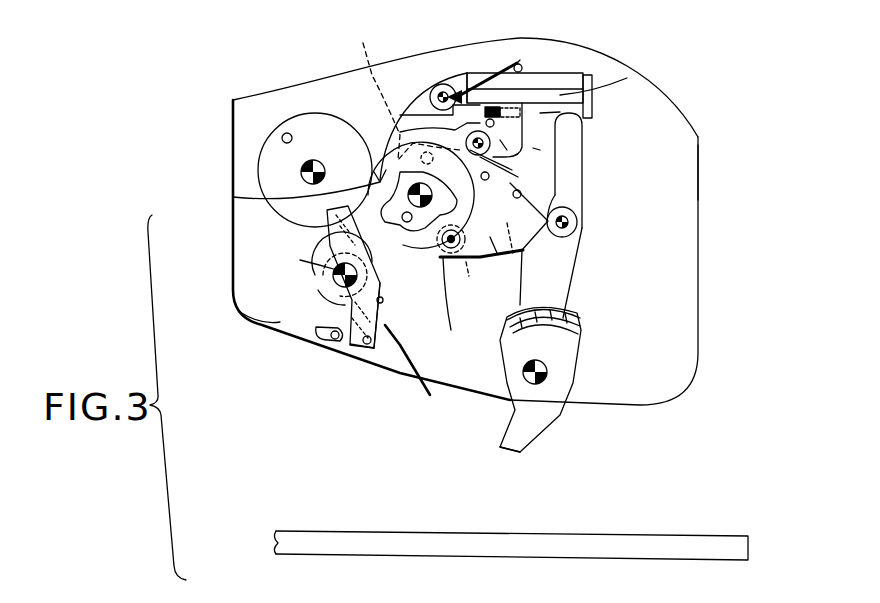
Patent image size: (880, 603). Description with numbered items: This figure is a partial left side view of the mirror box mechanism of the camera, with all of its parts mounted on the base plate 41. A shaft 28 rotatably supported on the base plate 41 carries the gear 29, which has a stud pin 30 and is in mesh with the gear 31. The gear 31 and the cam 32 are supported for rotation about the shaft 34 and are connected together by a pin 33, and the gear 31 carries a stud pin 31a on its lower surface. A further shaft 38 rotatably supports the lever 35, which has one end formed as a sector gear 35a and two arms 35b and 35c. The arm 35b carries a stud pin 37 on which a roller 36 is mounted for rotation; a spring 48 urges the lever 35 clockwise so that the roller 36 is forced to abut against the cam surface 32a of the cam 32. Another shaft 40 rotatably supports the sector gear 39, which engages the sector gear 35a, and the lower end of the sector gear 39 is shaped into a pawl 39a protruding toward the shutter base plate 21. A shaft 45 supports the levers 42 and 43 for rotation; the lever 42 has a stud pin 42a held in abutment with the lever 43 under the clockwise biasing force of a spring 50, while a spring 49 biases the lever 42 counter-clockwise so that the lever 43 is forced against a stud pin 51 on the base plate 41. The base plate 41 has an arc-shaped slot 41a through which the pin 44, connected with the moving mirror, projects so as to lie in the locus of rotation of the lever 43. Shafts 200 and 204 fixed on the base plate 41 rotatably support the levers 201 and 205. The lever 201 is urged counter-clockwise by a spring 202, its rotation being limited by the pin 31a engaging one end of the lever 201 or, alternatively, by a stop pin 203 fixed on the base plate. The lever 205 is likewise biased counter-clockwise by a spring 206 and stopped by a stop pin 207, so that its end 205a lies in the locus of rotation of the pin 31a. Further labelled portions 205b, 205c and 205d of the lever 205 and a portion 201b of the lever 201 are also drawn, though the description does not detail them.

The shutter base plate 21 is at (603, 533).
The shaft 28 is at (303, 170).
The gear 29 is at (259, 183).
The stud pin 30 is at (283, 134).
The gear 31 is at (378, 178).
The stud pin 31a is at (364, 44).
The cam 32 is at (415, 248).
The cam surface 32a is at (252, 201).
The pin 33 is at (406, 223).
The shaft 34 is at (412, 192).
The lever 35 is at (580, 250).
The sector gear 35a is at (548, 322).
The arm 35b is at (497, 256).
The arm 35c is at (532, 148).
The roller 36 is at (459, 253).
The stud pin 37 is at (451, 330).
The shaft 38 is at (578, 225).
The sector gear 39 is at (567, 360).
The pawl 39a is at (507, 426).
The shaft 40 is at (541, 383).
The base plate 41 is at (700, 330).
The arc-shaped slot 41a is at (290, 318).
The lever 42 is at (308, 279).
The stud pin 42a is at (418, 357).
The lever 43 is at (388, 340).
The pin 44 is at (327, 337).
The shaft 45 is at (300, 260).
The spring 48 is at (552, 193).
The spring 49 is at (374, 352).
The spring 50 is at (372, 296).
The stud pin 51 is at (364, 346).
The shaft 200 is at (507, 150).
The lever 201 is at (699, 163).
The portion of member 201b is at (560, 112).
The spring 202 is at (515, 165).
The stop pin 203 is at (600, 115).
The shaft 204 is at (437, 92).
The lever 205 is at (570, 68).
The end 205a is at (403, 145).
The end cap of housing 205b is at (590, 78).
The portion of housing 205c is at (627, 78).
The portion of housing 205d is at (475, 90).
The spring 206 is at (516, 65).
The stop pin 207 is at (522, 62).